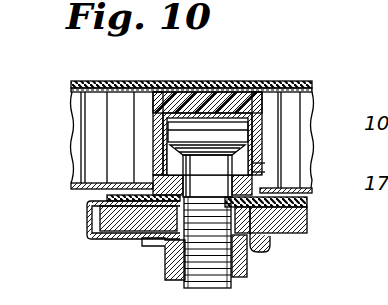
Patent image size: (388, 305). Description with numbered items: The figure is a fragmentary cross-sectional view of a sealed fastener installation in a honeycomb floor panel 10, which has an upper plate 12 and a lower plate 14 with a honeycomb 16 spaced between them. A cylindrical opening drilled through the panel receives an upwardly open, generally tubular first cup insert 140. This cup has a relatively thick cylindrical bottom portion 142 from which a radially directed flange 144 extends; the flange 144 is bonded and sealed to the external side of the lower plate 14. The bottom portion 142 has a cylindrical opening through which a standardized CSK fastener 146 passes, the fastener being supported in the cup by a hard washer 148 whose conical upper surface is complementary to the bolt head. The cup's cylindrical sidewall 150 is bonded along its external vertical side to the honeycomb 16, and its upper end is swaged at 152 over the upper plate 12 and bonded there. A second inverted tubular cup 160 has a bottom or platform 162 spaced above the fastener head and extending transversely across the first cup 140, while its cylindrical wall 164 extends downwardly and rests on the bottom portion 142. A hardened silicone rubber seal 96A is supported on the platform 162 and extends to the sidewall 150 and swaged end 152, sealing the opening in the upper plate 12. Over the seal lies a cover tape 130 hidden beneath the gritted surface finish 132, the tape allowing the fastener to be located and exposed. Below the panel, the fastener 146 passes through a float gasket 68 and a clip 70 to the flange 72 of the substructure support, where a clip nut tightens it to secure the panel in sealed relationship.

The honeycomb floor panel 10 is at (290, 148).
The upper plate 12 is at (78, 104).
The lower plate 14 is at (105, 197).
The honeycomb 16 is at (95, 134).
The float gasket 68 is at (307, 207).
The clip 70 is at (88, 239).
The flange of substructure support 72 is at (289, 228).
The hardened silicone rubber seal 96A is at (210, 82).
The cover tape 130 is at (184, 86).
The gritted plastic surface finish 132 is at (126, 80).
The first cup insert 140 is at (267, 141).
The bottom portion 142 is at (253, 252).
The flange 144 is at (103, 208).
The CSK fastener 146 is at (190, 289).
The hard washer 148 is at (262, 172).
The cylindrical sidewall 150 is at (130, 158).
The swaged end 152 is at (254, 82).
The second inverted tubular cup 160 is at (236, 82).
The bottom or platform 162 is at (162, 82).
The cylindrical wall 164 is at (262, 163).